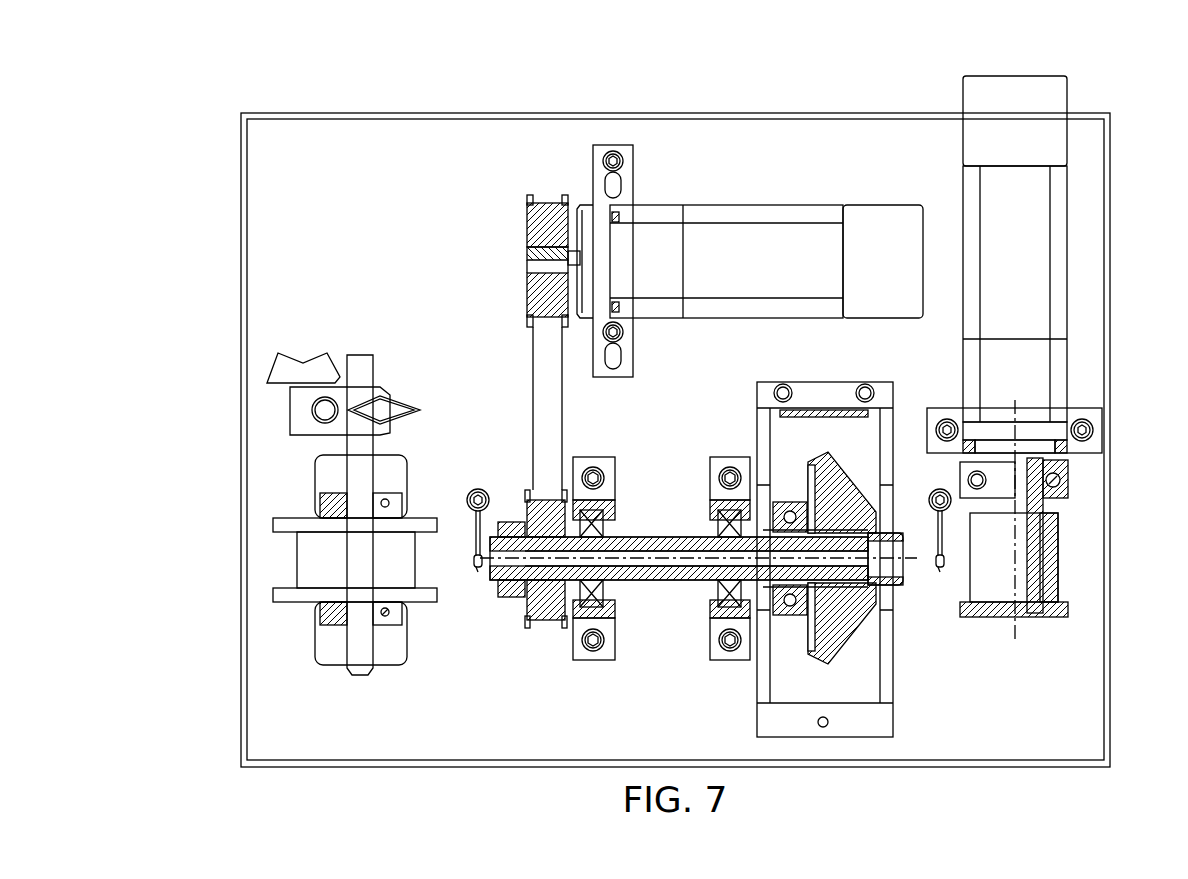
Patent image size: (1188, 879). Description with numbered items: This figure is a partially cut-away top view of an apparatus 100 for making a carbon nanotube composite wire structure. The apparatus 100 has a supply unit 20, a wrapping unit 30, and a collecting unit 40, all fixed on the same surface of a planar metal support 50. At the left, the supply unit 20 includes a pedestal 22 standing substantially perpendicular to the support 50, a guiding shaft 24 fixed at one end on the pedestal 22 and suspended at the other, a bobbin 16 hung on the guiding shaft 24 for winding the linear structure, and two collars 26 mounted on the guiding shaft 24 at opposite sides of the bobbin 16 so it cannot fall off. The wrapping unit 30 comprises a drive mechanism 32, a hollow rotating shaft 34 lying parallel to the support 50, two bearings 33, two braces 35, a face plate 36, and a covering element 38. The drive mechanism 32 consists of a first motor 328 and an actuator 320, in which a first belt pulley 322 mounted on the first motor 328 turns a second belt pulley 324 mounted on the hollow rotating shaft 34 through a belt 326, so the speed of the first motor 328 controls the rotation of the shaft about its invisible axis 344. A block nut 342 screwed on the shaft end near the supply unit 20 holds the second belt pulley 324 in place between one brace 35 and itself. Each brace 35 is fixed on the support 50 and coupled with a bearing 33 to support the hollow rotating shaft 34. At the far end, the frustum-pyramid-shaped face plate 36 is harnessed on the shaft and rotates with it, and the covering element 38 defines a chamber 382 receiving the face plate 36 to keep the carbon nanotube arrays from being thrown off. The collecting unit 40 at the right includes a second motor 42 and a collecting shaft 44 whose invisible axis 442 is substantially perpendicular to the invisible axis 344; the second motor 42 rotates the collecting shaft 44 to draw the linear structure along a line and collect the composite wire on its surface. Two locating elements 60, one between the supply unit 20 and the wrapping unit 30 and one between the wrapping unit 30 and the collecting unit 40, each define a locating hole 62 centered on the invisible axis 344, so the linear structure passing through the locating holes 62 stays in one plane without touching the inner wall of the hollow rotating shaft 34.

The apparatus 100 is at (660, 100).
The support 50 is at (268, 190).
The supply unit 20 is at (311, 467).
The pedestal 22 is at (320, 405).
The guiding shaft 24 is at (355, 468).
The collar 26 is at (320, 492).
The bobbin 16 is at (312, 558).
The wrapping unit 30 is at (780, 190).
The drive mechanism 32 is at (511, 396).
The actuator 320 is at (485, 449).
The first belt pulley 322 is at (530, 290).
The second belt pulley 324 is at (514, 514).
The belt 326 is at (540, 373).
The first motor 328 is at (657, 247).
The bearing 33 is at (728, 520).
The hollow rotating shaft 34 is at (658, 570).
The block nut 342 is at (508, 610).
The invisible axis 344 is at (690, 575).
The brace 35 is at (720, 660).
The face plate 36 is at (860, 628).
The covering element 38 is at (847, 540).
The chamber 382 is at (858, 435).
The collecting unit 40 is at (1047, 264).
The second motor 42 is at (1010, 260).
The collecting shaft 44 is at (1069, 520).
The invisible axis 442 is at (1018, 560).
The locating element 60 is at (478, 490).
The locating hole 62 is at (477, 572).